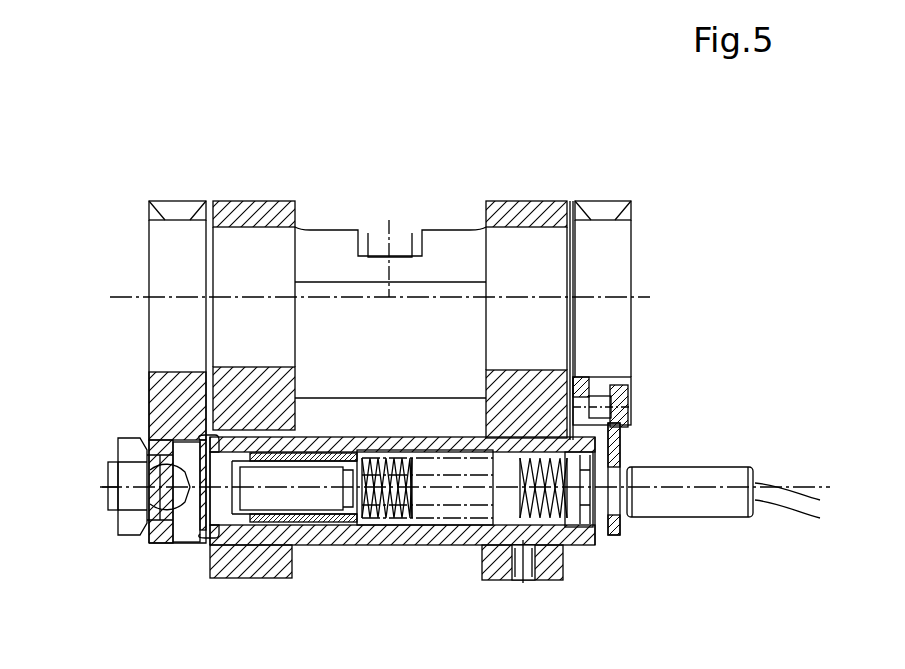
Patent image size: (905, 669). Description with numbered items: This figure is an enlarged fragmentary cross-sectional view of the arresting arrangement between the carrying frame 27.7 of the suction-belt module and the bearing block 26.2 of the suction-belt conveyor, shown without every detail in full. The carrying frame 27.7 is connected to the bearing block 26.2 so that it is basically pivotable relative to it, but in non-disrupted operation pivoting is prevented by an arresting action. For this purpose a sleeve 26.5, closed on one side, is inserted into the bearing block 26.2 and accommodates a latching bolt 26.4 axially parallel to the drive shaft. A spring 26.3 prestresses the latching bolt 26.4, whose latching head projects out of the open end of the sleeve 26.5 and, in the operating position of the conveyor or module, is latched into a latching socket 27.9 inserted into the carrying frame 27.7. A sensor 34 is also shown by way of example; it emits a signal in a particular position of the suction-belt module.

The carrying frame 27.7 is at (602, 210).
The bearing block 26.2 is at (522, 382).
The latching socket 27.9 is at (187, 455).
The latching bolt 26.4 is at (308, 515).
The spring 26.3 is at (415, 480).
The sleeve 26.5 is at (583, 530).
The sensor 34 is at (713, 505).